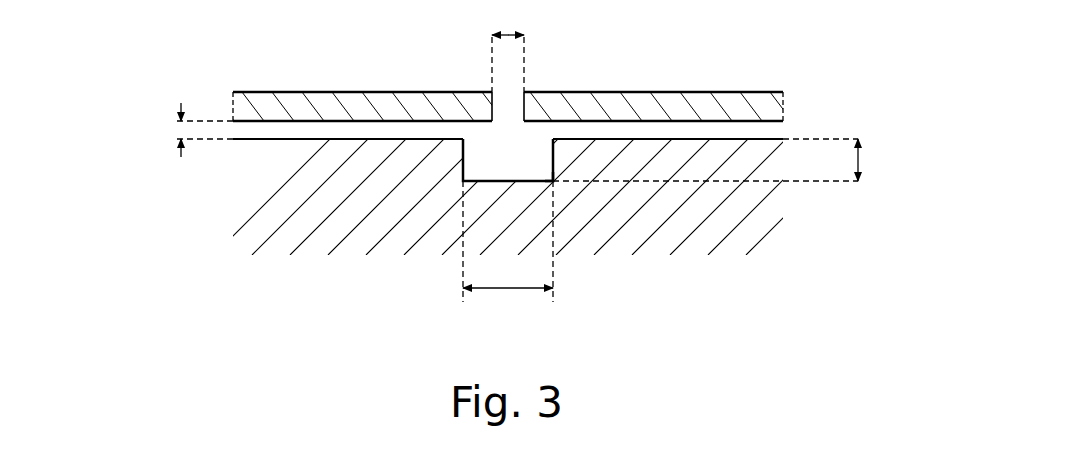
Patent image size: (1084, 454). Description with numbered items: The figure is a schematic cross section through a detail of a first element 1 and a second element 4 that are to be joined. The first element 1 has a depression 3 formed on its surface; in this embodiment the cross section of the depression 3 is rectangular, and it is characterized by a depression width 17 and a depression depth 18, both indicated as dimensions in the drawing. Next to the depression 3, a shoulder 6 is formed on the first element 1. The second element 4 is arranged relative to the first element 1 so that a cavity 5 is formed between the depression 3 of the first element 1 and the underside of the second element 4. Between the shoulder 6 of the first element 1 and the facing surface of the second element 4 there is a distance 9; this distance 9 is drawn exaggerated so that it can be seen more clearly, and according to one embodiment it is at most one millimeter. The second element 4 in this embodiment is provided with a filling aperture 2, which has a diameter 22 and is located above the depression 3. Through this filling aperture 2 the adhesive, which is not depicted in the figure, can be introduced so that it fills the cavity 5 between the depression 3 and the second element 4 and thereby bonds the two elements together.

The first element 1 is at (752, 226).
The filling aperture 2 is at (505, 108).
The depression 3 is at (493, 165).
The second element 4 is at (662, 108).
The cavity 5 is at (530, 167).
The shoulder 6 is at (600, 142).
The distance 9 is at (194, 130).
The depression width 17 is at (508, 249).
The depression depth 18 is at (724, 160).
The diameter 22 is at (508, 19).